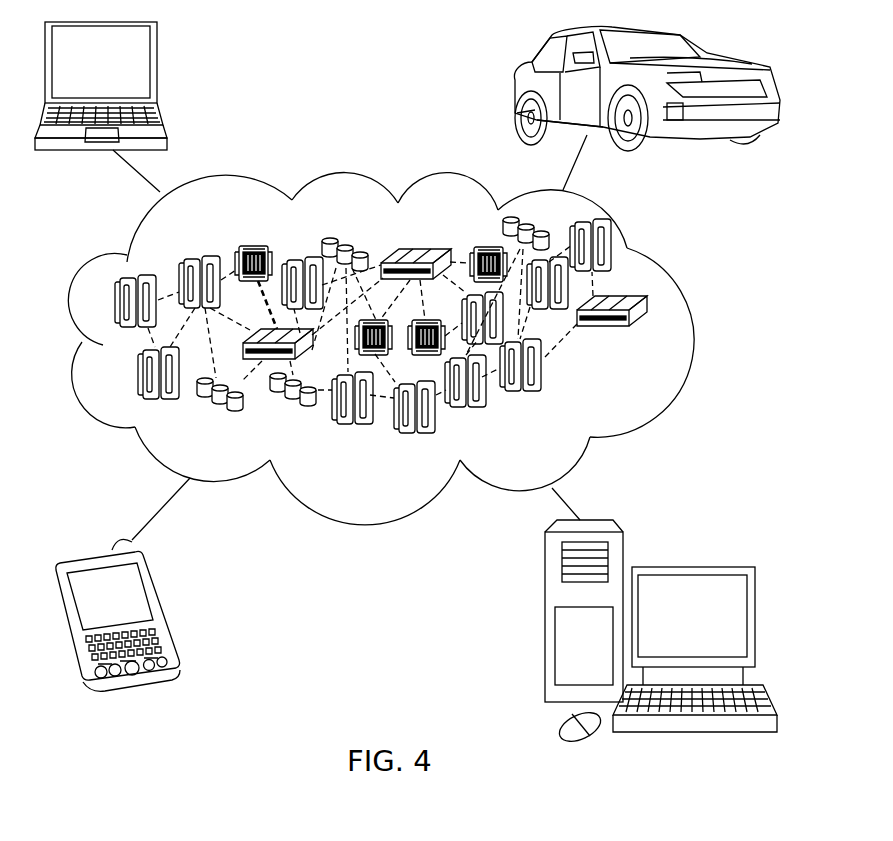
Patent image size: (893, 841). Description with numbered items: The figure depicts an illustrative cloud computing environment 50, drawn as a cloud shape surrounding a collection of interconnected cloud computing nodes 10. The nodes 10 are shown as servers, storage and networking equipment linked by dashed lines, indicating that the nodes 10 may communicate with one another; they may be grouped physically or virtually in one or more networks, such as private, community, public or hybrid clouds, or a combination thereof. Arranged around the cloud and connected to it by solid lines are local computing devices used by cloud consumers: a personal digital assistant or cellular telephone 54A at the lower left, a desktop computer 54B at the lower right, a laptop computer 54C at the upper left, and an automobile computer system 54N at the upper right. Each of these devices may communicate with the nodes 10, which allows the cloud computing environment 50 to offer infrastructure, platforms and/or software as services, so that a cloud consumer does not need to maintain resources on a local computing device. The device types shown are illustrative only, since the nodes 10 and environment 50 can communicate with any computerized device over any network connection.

The cloud computing nodes 10 is at (651, 388).
The cloud computing environment 50 is at (675, 280).
The personal digital assistant or cellular telephone 54A is at (160, 613).
The desktop computer 54B is at (687, 567).
The laptop computer 54C is at (157, 67).
The automobile computer system 54N is at (513, 82).